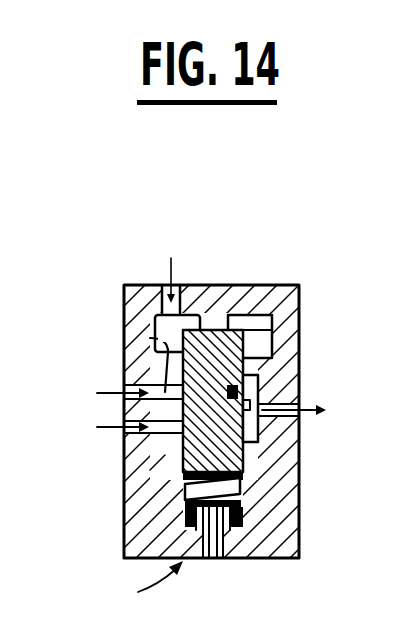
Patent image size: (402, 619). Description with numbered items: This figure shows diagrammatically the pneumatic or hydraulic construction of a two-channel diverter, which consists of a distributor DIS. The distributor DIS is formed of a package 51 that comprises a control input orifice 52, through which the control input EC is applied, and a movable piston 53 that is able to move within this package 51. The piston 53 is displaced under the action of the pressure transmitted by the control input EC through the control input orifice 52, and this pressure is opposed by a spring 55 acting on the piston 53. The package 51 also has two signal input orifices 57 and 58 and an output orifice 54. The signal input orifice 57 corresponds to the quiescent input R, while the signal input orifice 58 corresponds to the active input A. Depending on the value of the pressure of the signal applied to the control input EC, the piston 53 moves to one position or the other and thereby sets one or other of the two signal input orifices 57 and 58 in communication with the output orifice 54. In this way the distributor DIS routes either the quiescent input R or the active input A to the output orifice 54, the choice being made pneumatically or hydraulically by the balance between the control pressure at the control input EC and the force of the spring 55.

The package 51 is at (202, 300).
The control input orifice 52 is at (163, 312).
The movable piston 53 is at (243, 333).
The output orifice 54 is at (265, 398).
The spring 55 is at (248, 480).
The signal input orifice 57 is at (158, 333).
The signal input orifice 58 is at (158, 460).
The control input EC is at (186, 310).
The quiescent input R is at (155, 384).
The active input A is at (150, 440).
The distributor DIS is at (135, 583).